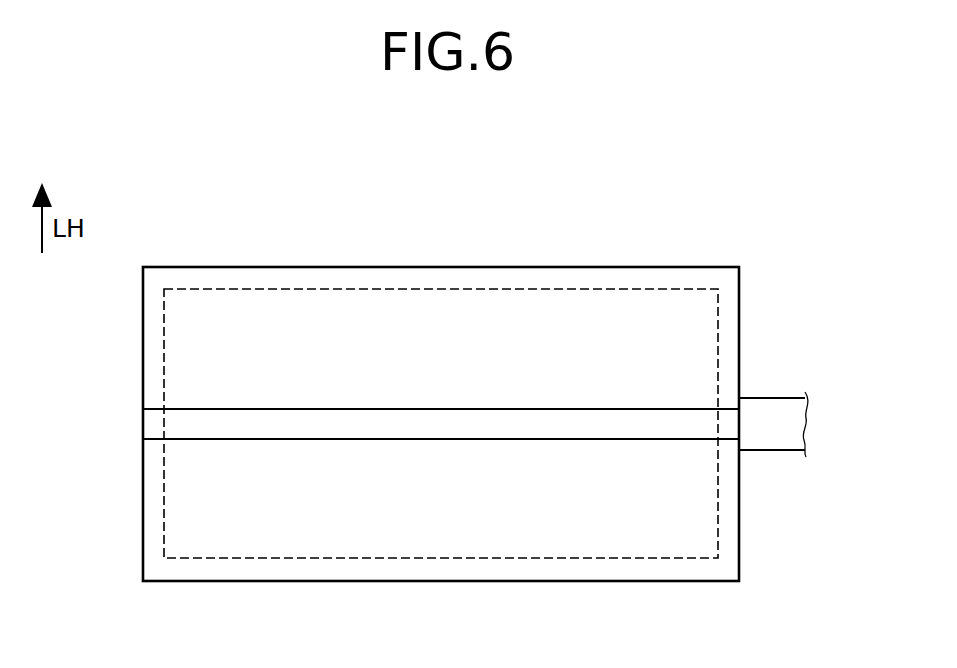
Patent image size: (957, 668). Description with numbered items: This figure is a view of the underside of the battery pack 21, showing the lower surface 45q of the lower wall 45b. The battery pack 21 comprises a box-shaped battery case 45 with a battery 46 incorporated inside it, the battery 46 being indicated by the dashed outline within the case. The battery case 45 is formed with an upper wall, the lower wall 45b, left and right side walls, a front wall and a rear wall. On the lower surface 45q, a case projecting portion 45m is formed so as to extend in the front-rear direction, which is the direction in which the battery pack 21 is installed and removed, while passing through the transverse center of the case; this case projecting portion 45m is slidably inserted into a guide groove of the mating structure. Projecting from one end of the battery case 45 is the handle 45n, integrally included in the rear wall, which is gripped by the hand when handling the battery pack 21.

The battery pack 21 is at (257, 267).
The battery case 45 is at (418, 276).
The lower wall 45b is at (333, 350).
The lower surface 45q is at (195, 358).
The battery 46 is at (164, 508).
The case projecting portion 45m is at (433, 440).
The handle 45n is at (786, 425).